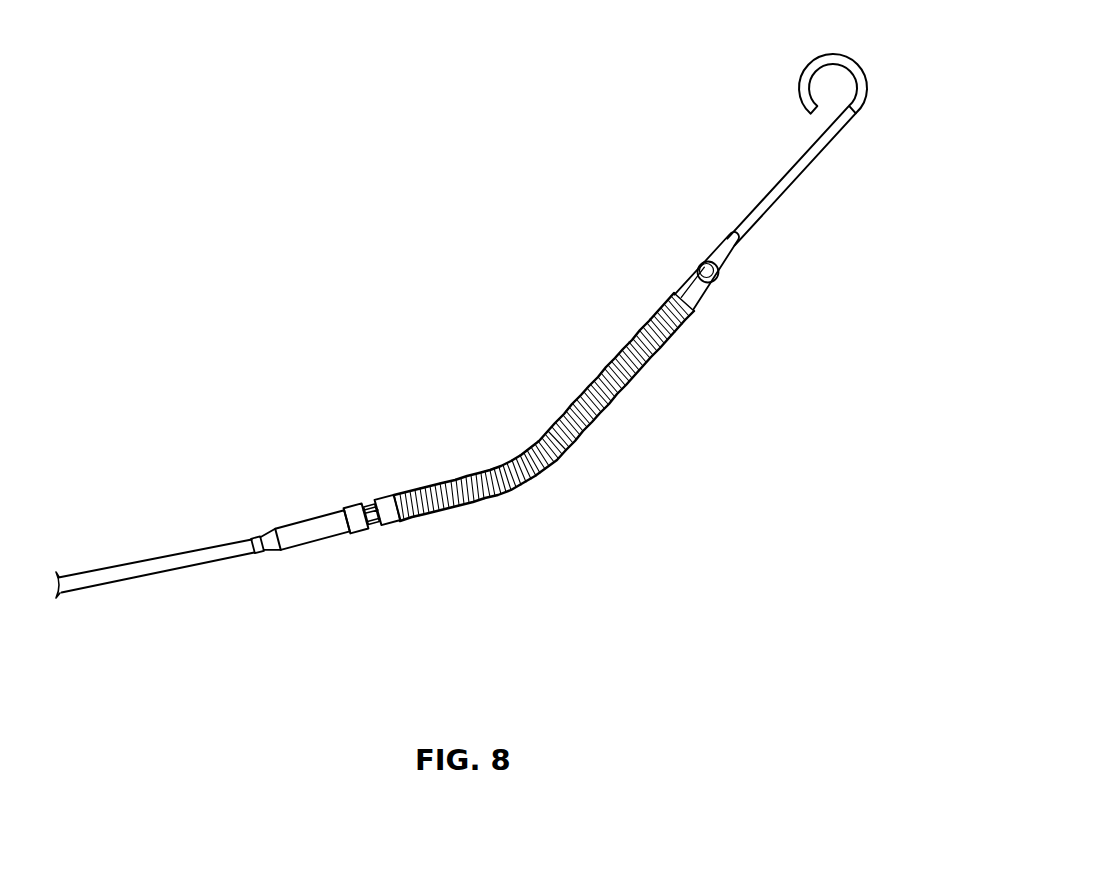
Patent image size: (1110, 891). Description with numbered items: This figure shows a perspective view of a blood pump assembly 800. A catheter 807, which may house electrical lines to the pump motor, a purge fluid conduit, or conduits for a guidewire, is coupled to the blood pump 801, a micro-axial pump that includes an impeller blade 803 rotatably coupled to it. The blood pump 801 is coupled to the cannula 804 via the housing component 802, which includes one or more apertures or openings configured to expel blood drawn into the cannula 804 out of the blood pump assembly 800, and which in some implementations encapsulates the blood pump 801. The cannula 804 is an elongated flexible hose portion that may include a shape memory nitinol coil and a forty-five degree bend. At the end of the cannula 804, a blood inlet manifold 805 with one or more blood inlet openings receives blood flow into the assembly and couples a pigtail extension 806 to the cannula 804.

The blood pump assembly 800 is at (258, 235).
The blood pump 801 is at (318, 533).
The housing component 802 is at (358, 526).
The impeller blade 803 is at (372, 505).
The cannula 804 is at (582, 428).
The blood inlet manifold 805 is at (698, 290).
The pigtail extension 806 is at (818, 66).
The catheter 807 is at (128, 582).